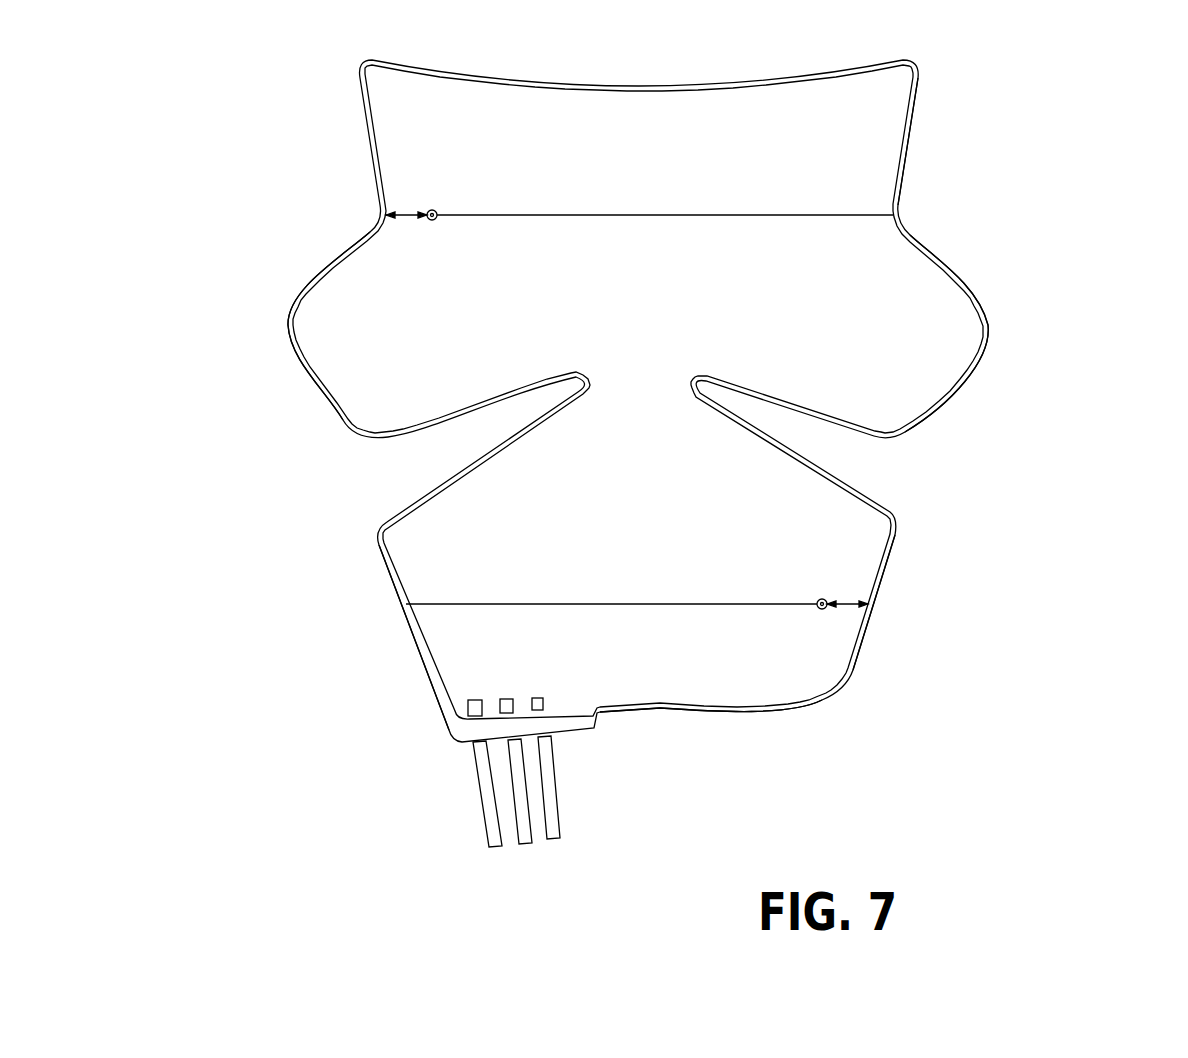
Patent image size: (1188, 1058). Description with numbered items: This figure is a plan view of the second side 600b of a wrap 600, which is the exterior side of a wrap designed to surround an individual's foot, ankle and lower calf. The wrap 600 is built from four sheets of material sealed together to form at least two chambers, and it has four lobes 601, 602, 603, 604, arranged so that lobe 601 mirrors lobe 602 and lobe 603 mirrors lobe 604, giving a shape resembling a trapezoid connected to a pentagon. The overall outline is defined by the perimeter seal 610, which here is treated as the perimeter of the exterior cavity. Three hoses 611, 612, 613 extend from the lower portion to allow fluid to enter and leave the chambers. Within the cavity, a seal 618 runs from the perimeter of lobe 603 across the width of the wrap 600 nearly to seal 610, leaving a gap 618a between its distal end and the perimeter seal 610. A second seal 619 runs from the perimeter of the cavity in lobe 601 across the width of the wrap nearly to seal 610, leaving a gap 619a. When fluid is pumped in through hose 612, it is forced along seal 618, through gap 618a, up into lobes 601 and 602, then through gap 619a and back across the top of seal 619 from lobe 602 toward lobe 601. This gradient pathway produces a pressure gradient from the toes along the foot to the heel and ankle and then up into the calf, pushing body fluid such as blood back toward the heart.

The wrap 600 is at (1010, 106).
The second side of wrap 600b is at (955, 205).
The lobe 601 is at (995, 348).
The lobe 602 is at (288, 352).
The lobe 603 is at (425, 692).
The lobe 604 is at (855, 680).
The perimeter seal 610 is at (675, 708).
The hose 611 is at (503, 843).
The hose 612 is at (530, 832).
The hose 613 is at (560, 822).
The seal 618 is at (567, 603).
The gap 618a is at (850, 603).
The seal 619 is at (576, 215).
The gap 619a is at (405, 217).